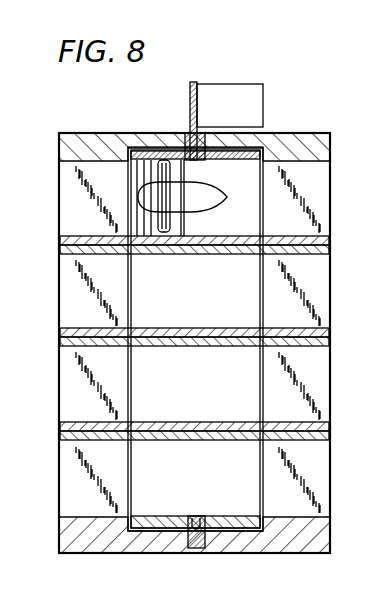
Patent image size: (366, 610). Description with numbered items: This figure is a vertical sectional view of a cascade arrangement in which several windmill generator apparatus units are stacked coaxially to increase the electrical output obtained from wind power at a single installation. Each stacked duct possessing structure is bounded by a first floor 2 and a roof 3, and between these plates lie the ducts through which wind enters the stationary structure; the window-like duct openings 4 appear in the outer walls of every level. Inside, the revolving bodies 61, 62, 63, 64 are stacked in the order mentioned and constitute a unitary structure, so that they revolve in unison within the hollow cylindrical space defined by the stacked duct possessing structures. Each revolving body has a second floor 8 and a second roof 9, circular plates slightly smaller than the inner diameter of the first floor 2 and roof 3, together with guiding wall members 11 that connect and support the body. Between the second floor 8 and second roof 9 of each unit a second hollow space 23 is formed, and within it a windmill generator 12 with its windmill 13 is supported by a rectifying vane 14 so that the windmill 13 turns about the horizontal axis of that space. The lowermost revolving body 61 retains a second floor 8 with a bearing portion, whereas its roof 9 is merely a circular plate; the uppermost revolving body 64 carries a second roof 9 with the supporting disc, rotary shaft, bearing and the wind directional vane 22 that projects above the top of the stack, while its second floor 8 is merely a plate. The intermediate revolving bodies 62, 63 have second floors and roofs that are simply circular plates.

The first floor 2 is at (329, 239).
The roof 3 is at (331, 148).
The window panels 4 is at (325, 207).
The second floor 8 is at (165, 520).
The second roof 9 is at (170, 441).
The guiding wall members 11 is at (237, 216).
The windmill generator 12 is at (199, 215).
The windmill 13 is at (164, 165).
The rectifying vane 14 is at (56, 183).
The wind directional vane 22 is at (263, 95).
The second hollow space 23 is at (138, 220).
The lowermost revolving body 61 is at (264, 468).
The intermediate revolving body 62 is at (264, 375).
The intermediate revolving body 63 is at (264, 285).
The uppermost revolving body 64 is at (264, 188).